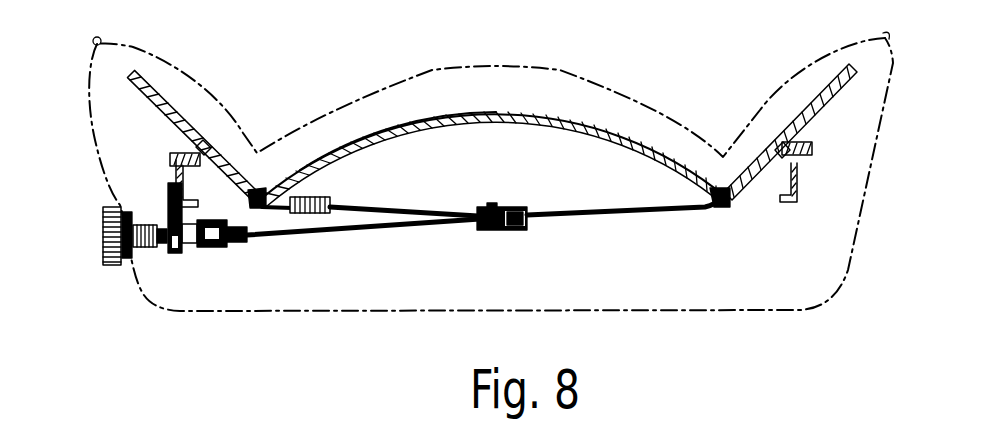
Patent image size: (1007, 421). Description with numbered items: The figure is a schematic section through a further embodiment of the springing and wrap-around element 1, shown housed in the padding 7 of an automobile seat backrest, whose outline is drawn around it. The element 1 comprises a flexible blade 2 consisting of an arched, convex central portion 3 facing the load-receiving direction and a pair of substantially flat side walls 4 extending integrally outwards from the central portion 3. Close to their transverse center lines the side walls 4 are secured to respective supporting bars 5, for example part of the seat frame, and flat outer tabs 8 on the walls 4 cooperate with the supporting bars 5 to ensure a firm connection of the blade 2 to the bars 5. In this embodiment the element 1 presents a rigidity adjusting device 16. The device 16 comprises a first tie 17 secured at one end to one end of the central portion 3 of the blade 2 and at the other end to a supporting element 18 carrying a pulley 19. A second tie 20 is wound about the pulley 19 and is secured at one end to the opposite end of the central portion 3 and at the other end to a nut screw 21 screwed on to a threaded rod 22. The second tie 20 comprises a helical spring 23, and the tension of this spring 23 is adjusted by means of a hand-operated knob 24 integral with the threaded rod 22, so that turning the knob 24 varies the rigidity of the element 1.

The springing and wrap-around element 1 is at (493, 107).
The flexible blade 2 is at (561, 112).
The central portion 3 is at (396, 125).
The side walls 4 is at (167, 110).
The supporting bars 5 is at (167, 173).
The padding 7 is at (624, 112).
The flat outer tabs 8 is at (167, 157).
The rigidity adjusting device 16 is at (300, 254).
The first tie 17 is at (600, 222).
The supporting element 18 is at (522, 233).
The pulley 19 is at (487, 237).
The second tie 20 is at (348, 236).
The nut screw 21 is at (222, 252).
The threaded rod 22 is at (245, 243).
The helical spring 23 is at (318, 195).
The hand-operated knob 24 is at (100, 228).